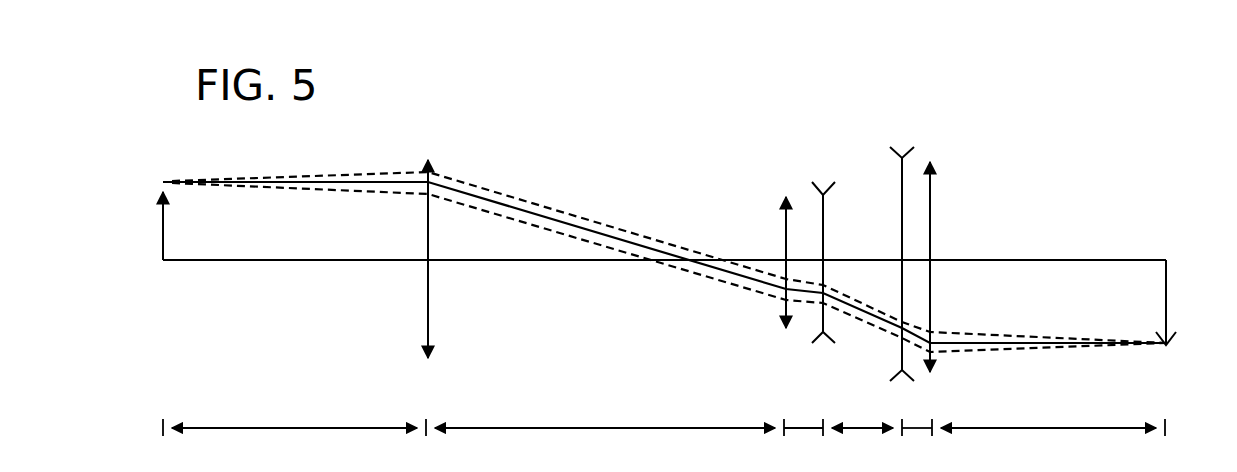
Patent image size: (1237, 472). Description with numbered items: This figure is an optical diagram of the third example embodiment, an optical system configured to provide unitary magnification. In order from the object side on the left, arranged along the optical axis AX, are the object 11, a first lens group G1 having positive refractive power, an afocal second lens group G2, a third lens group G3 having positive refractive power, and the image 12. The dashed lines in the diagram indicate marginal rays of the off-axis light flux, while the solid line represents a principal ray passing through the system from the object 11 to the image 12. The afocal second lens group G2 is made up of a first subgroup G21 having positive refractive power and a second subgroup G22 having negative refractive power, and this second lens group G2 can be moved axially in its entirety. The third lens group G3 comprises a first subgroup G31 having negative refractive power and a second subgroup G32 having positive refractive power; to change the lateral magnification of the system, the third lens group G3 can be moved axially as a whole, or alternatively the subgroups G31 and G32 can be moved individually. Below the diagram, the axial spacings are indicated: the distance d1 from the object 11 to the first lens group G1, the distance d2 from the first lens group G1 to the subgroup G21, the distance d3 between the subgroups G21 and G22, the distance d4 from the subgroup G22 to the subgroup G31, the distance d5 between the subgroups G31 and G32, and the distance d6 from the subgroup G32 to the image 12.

The object 11 is at (163, 202).
The image 12 is at (1166, 277).
The optical axis AX is at (222, 262).
The first lens group G1 is at (428, 208).
The second lens group G2 is at (845, 132).
The first subgroup of second lens group G21 is at (786, 208).
The second subgroup of second lens group G22 is at (823, 212).
The third lens group G3 is at (952, 93).
The first subgroup of third lens group G31 is at (902, 175).
The second subgroup of third lens group G32 is at (930, 180).
The distance from object to first lens group d1 is at (294, 446).
The distance from first lens group to first subgroup of second lens group d2 is at (605, 446).
The distance from first subgroup to second subgroup of second lens group d3 is at (803, 446).
The distance from second subgroup of second lens group to first subgroup of third le d4 is at (862, 446).
The distance from first subgroup to second subgroup of third lens group d5 is at (917, 446).
The distance from second subgroup of third lens group to image d6 is at (1048, 446).